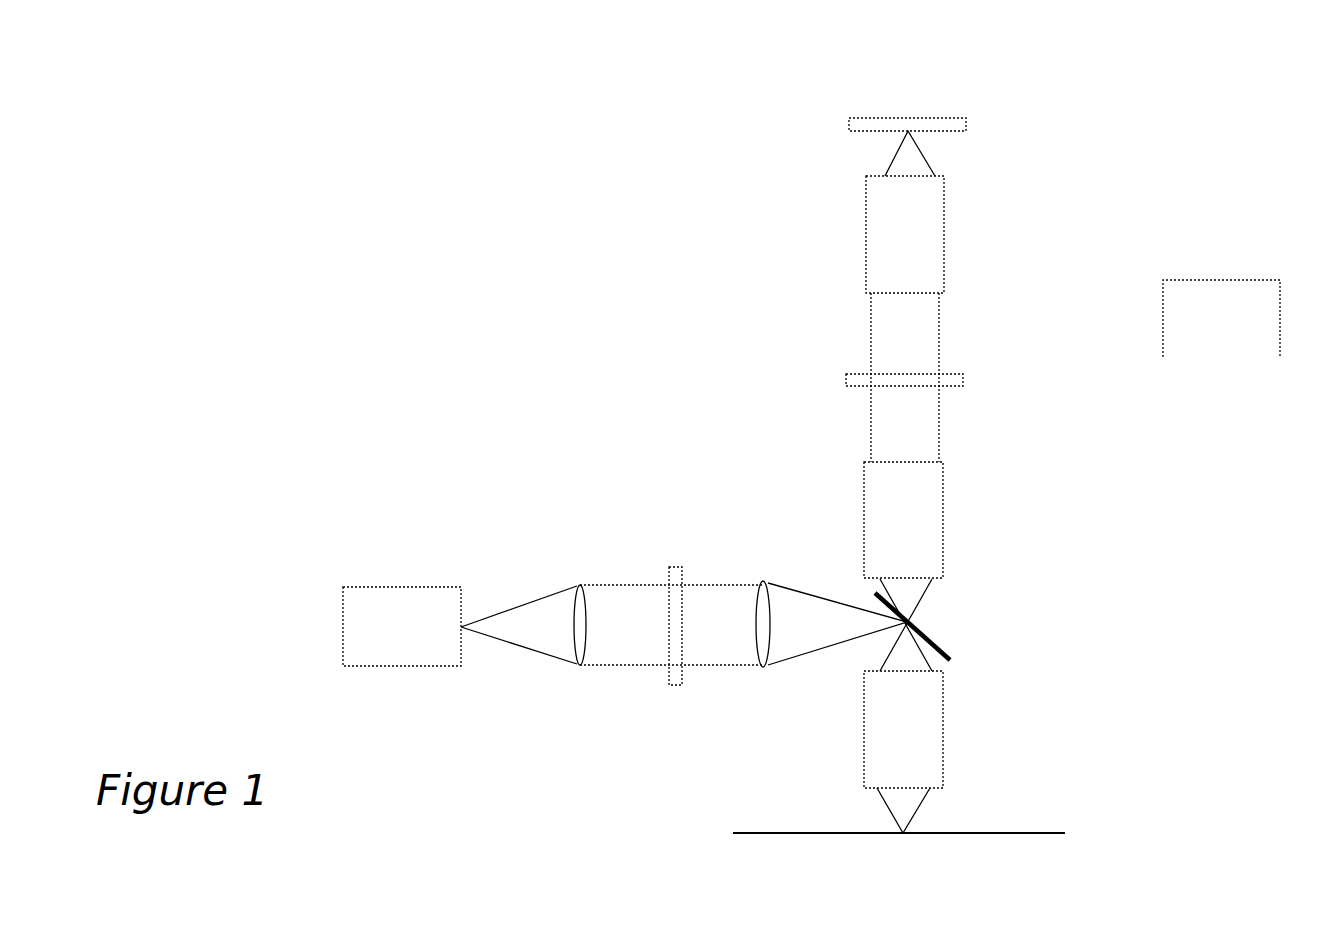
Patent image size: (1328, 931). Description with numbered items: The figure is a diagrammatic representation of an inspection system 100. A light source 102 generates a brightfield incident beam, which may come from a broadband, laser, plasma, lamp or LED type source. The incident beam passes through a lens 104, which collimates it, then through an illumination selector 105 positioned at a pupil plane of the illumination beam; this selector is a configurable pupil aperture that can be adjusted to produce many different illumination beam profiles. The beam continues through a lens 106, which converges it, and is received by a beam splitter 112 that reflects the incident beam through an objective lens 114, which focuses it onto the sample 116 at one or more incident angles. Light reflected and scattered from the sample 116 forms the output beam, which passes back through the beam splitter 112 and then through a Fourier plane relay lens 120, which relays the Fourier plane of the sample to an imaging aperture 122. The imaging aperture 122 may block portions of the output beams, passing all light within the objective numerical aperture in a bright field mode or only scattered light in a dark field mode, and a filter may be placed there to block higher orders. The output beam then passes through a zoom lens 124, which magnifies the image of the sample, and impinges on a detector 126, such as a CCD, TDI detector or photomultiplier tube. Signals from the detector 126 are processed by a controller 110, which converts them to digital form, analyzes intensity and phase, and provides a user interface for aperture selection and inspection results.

The inspection system 100 is at (1222, 96).
The light source 102 is at (393, 587).
The lens 104 is at (578, 585).
The illumination selector 105 is at (680, 567).
The lens 106 is at (764, 580).
The controller 110 is at (1220, 279).
The beam splitter 112 is at (922, 633).
The objective lens 114 is at (943, 721).
The sample 116 is at (1045, 833).
The Fourier plane relay lens 120 is at (943, 545).
The imaging aperture 122 is at (963, 378).
The zoom lens 124 is at (944, 231).
The detector 126 is at (966, 122).